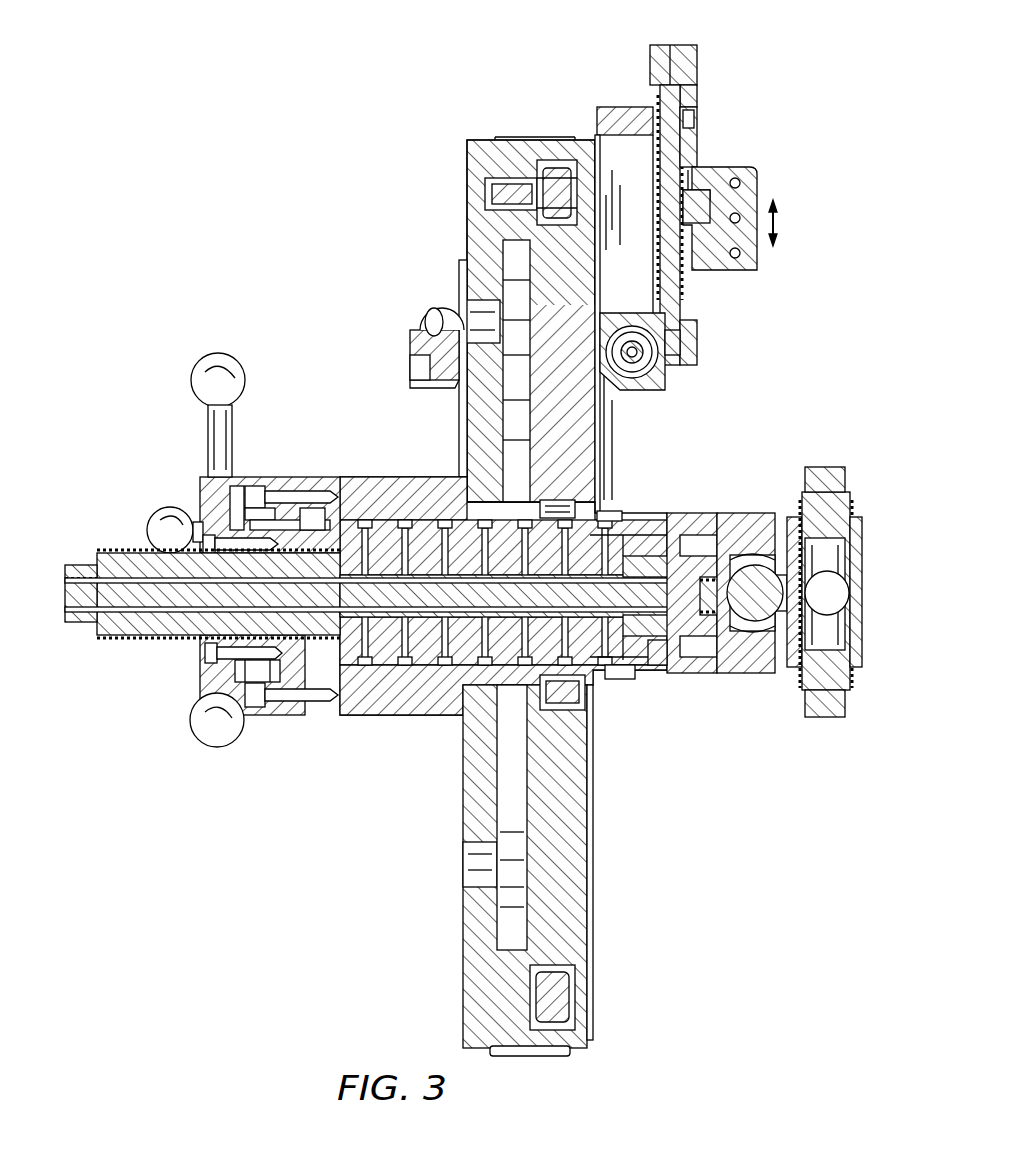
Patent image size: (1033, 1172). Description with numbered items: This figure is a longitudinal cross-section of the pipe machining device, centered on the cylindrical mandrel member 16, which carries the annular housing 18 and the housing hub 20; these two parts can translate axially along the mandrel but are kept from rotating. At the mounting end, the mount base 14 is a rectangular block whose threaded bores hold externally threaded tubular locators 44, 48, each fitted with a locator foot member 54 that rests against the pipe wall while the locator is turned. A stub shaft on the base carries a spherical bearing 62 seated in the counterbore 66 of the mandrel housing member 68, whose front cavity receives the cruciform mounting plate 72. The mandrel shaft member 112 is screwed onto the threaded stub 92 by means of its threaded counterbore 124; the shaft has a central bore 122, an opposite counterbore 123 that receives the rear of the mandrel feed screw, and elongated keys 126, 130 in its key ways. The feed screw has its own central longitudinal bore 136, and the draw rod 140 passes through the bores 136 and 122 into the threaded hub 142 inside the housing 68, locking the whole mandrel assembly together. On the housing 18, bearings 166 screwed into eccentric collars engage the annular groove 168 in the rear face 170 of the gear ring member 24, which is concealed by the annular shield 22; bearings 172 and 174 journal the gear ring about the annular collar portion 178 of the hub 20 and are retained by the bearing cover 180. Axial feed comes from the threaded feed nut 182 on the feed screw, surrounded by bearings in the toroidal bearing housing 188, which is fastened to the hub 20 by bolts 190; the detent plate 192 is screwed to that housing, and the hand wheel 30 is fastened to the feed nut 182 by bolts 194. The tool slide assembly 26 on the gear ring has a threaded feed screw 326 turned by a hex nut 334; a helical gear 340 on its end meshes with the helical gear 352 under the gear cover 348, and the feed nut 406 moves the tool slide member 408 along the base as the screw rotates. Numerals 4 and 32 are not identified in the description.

The shaft 4 is at (108, 562).
The mount base 14 is at (858, 668).
The cylindrical mandrel member 16 is at (362, 706).
The annular housing 18 is at (476, 185).
The housing hub 20 is at (380, 660).
The annular shield 22 is at (530, 1056).
The gear ring member 24 is at (576, 847).
The tool slide assembly 26 is at (622, 107).
The hand wheel 30 is at (200, 682).
The knob 32 is at (208, 432).
The externally threaded tubular locator 44 is at (846, 520).
The externally threaded tubular locator 48 is at (793, 668).
The locator foot member 54 is at (818, 467).
The spherical bearing 62 is at (746, 616).
The counterbore 66 is at (757, 548).
The mandrel housing member 68 is at (740, 513).
The mounting plate 72 is at (705, 650).
The threaded stub 92 is at (633, 640).
The mandrel shaft member 112 is at (648, 530).
The central bore 122 is at (378, 575).
The counterbore 123 is at (346, 530).
The counterbore 124 is at (660, 662).
The elongated key 126 is at (420, 520).
The elongated key 130 is at (421, 690).
The central longitudinal bore 136 is at (137, 612).
The draw rod 140 is at (120, 580).
The threaded hub 142 is at (742, 612).
The bearing 166 is at (555, 175).
The annular groove 168 is at (562, 968).
The rear face 170 is at (524, 908).
The bearing 172 is at (560, 705).
The bearing 174 is at (576, 505).
The annular collar portion 178 is at (612, 676).
The bearing cover 180 is at (608, 513).
The threaded feed nut 182 is at (313, 520).
The toroidal bearing housing 188 is at (290, 488).
The bolt 190 is at (262, 702).
The detent plate 192 is at (240, 500).
The bolt 194 is at (215, 542).
The threaded feed screw 326 is at (688, 130).
The hex nut 334 is at (690, 60).
The helical gear 340 is at (692, 345).
The gear cover 348 is at (652, 386).
The helical gear 352 is at (630, 332).
The feed nut 406 is at (700, 192).
The tool slide member 408 is at (780, 216).